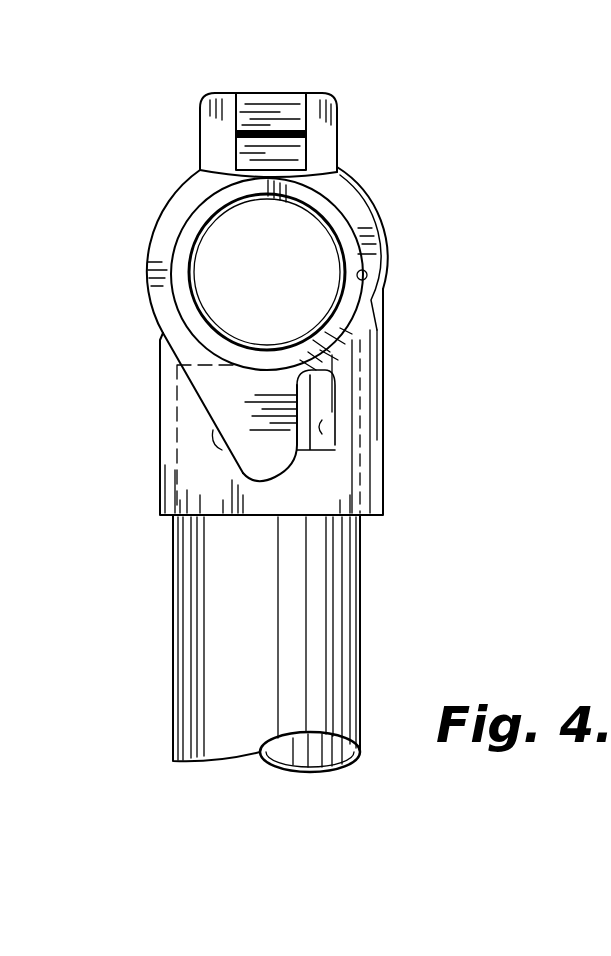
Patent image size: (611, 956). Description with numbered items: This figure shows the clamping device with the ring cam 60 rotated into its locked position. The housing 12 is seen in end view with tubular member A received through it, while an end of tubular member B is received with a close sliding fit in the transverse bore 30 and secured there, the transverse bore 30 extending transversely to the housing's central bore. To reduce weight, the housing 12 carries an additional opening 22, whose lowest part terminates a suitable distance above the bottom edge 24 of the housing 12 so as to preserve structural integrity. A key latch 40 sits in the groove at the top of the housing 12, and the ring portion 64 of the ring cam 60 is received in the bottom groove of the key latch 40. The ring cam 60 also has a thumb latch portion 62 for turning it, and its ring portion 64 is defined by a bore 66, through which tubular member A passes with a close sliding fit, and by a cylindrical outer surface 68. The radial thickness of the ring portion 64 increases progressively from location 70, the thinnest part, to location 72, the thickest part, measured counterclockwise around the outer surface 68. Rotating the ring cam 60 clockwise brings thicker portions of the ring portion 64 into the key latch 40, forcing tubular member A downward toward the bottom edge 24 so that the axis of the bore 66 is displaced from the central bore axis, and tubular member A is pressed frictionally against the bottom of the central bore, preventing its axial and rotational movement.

The housing 12 is at (160, 424).
The opening 22 is at (312, 447).
The bottom edge 24 is at (315, 517).
The transverse bore 30 is at (365, 527).
The key latch 40 is at (277, 108).
The ring cam 60 is at (358, 184).
The thumb latch portion 62 is at (272, 452).
The ring portion 64 is at (372, 240).
The bore 66 is at (367, 275).
The cylindrical outer surface 68 is at (220, 157).
The location 70 is at (345, 362).
The location 72 is at (173, 325).
The tubular member A is at (345, 330).
The tubular member B is at (173, 652).